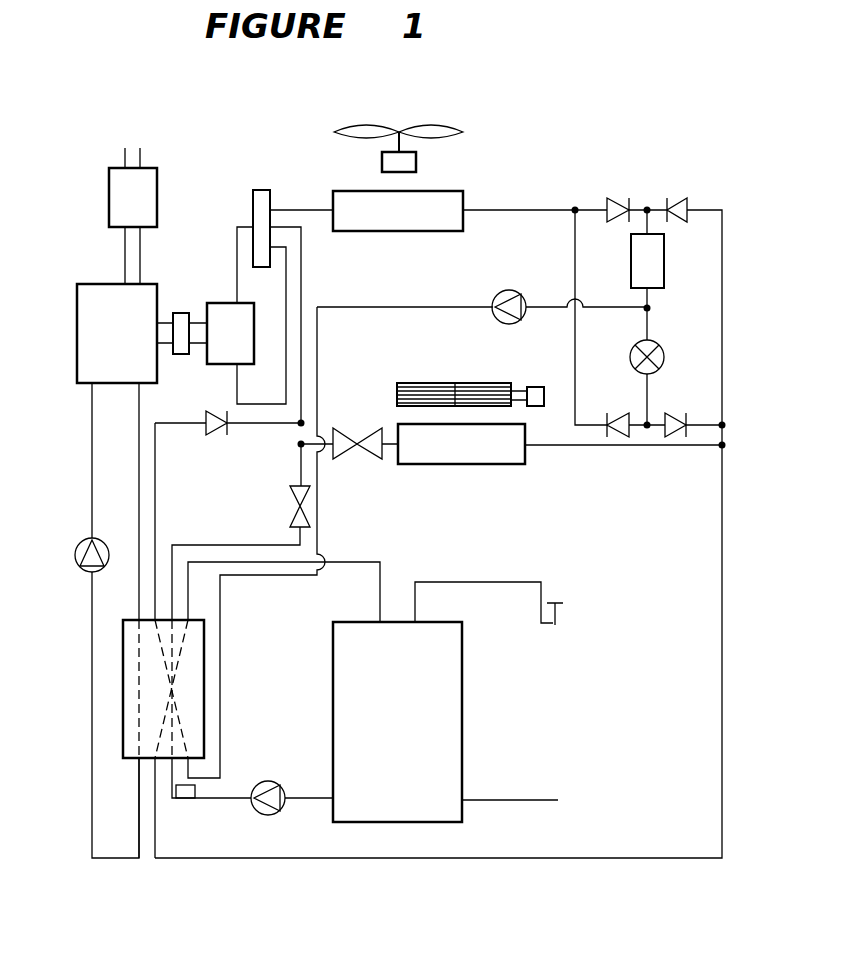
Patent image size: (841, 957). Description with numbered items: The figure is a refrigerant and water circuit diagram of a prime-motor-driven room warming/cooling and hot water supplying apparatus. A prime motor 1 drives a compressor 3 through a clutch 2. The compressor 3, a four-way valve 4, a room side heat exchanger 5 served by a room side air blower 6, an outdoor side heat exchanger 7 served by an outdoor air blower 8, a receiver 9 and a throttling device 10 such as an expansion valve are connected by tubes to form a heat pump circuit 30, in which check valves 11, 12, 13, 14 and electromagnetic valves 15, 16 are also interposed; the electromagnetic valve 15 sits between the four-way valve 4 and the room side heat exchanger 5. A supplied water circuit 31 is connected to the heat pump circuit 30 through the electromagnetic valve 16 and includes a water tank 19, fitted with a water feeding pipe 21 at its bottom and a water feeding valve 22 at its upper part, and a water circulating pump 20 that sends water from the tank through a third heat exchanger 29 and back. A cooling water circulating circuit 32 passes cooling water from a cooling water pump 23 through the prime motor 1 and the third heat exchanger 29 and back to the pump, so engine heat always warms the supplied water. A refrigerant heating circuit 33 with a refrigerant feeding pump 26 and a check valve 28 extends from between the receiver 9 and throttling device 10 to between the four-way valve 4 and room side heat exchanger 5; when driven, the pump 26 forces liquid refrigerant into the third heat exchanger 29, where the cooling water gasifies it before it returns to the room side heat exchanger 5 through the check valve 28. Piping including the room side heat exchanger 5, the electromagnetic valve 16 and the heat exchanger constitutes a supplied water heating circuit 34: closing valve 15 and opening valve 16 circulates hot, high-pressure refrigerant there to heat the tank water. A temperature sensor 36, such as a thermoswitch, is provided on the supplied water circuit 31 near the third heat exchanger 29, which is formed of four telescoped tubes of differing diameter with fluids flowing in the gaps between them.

The prime motor 1 is at (104, 284).
The clutch 2 is at (180, 312).
The compressor 3 is at (214, 303).
The four-way valve 4 is at (253, 205).
The room side heat exchanger 5 is at (447, 466).
The room side air blower 6 is at (478, 382).
The outdoor side heat exchanger 7 is at (432, 207).
The outdoor air blower 8 is at (435, 130).
The receiver 9 is at (665, 256).
The throttling device 10 is at (664, 358).
The check valve 11 is at (618, 205).
The check valve 12 is at (686, 204).
The check valve 13 is at (612, 414).
The check valve 14 is at (673, 414).
The electromagnetic valve 15 is at (360, 430).
The electromagnetic valve 16 is at (291, 501).
The water tank 19 is at (332, 717).
The water circulating pump 20 is at (262, 782).
The water feeding pipe 21 is at (518, 800).
The water feeding valve 22 is at (564, 630).
The cooling water pump 23 is at (110, 540).
The refrigerant feeding pump 26 is at (498, 298).
The check valve 28 is at (217, 410).
The third heat exchanger 29 is at (122, 647).
The heat pump circuit 30 is at (300, 207).
The supplied water circuit 31 is at (229, 804).
The cooling water circulating circuit 32 is at (102, 859).
The refrigerant heating circuit 33 is at (376, 305).
The supplied water heating circuit 34 is at (312, 859).
The temperature sensor 36 is at (190, 800).